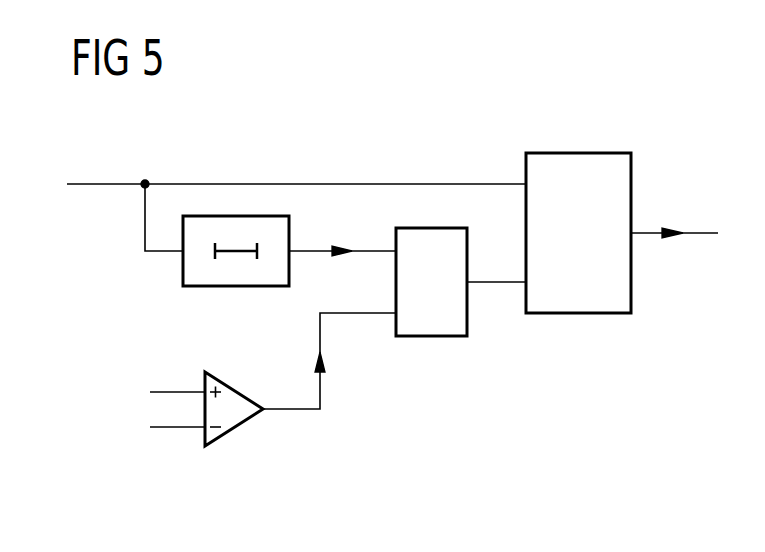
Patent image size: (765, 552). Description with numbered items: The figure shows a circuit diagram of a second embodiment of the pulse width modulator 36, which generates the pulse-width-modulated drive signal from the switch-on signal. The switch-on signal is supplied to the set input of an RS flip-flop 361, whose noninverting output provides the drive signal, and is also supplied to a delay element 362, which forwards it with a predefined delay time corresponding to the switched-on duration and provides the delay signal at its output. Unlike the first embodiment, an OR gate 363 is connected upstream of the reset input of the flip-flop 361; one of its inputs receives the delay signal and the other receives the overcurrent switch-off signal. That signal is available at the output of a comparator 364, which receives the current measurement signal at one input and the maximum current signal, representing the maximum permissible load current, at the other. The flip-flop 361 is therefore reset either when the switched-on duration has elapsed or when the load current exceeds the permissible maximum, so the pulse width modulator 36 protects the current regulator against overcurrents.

The pulse width modulator 36 is at (644, 133).
The RS flip-flop 361 is at (576, 313).
The delay element 362 is at (237, 286).
The OR gate 363 is at (432, 336).
The comparator 364 is at (238, 430).